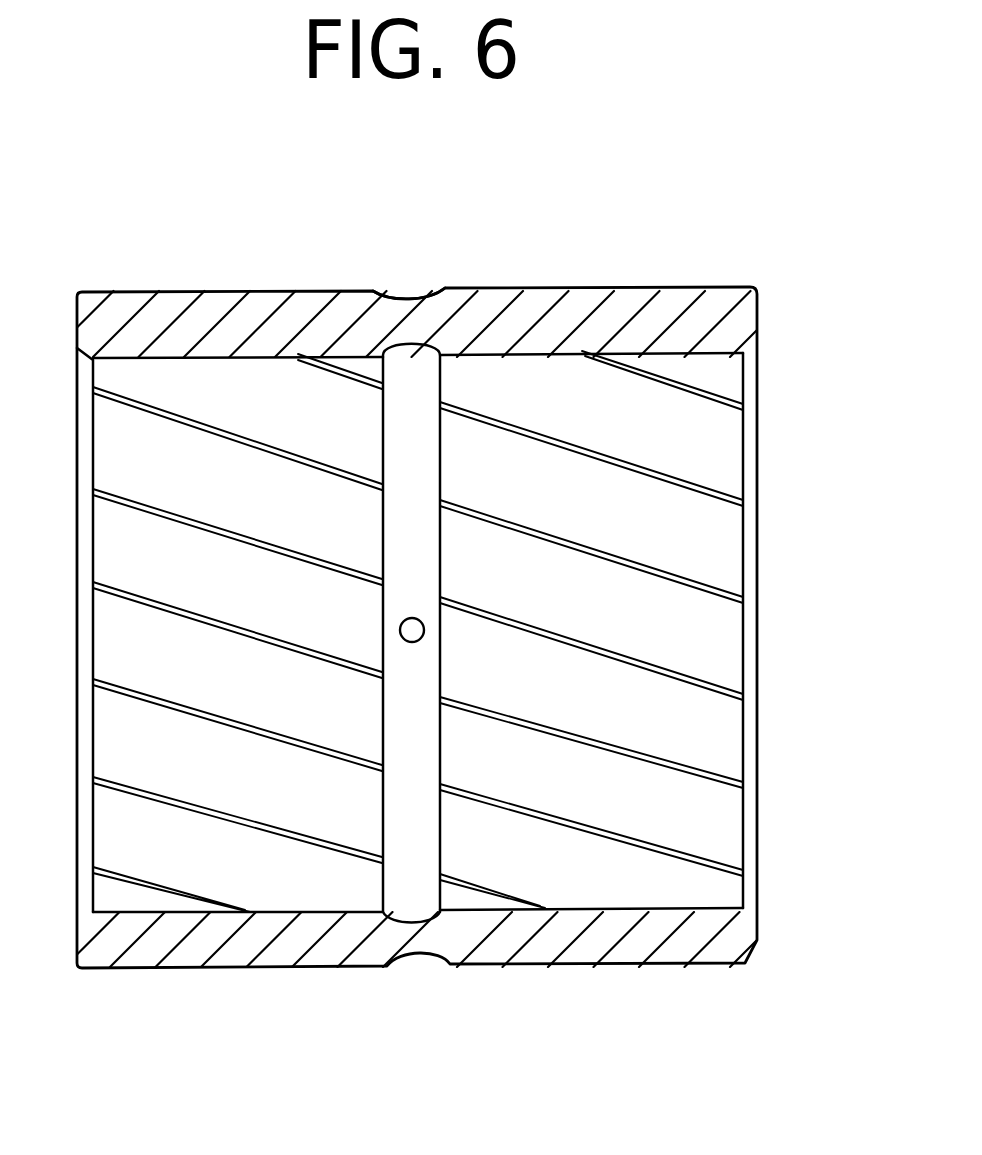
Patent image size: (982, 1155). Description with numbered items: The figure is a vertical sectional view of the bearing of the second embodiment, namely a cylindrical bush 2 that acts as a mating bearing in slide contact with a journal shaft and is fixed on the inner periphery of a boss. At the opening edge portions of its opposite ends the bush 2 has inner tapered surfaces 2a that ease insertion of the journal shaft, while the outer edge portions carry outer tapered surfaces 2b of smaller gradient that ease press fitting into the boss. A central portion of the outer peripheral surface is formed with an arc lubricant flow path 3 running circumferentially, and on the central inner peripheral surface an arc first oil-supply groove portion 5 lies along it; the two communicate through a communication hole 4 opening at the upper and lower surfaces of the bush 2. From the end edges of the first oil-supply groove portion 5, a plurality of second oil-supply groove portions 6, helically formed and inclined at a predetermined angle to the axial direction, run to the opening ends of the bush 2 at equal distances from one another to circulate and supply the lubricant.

The cylindrical bush 2 is at (630, 292).
The inner tapered surface 2a is at (757, 380).
The outer tapered surface 2b is at (745, 290).
The lubricant flow path 3 is at (393, 297).
The communication hole 4 is at (413, 618).
The first oil-supply groove portion 5 is at (455, 353).
The second oil-supply groove portions 6 is at (708, 485).